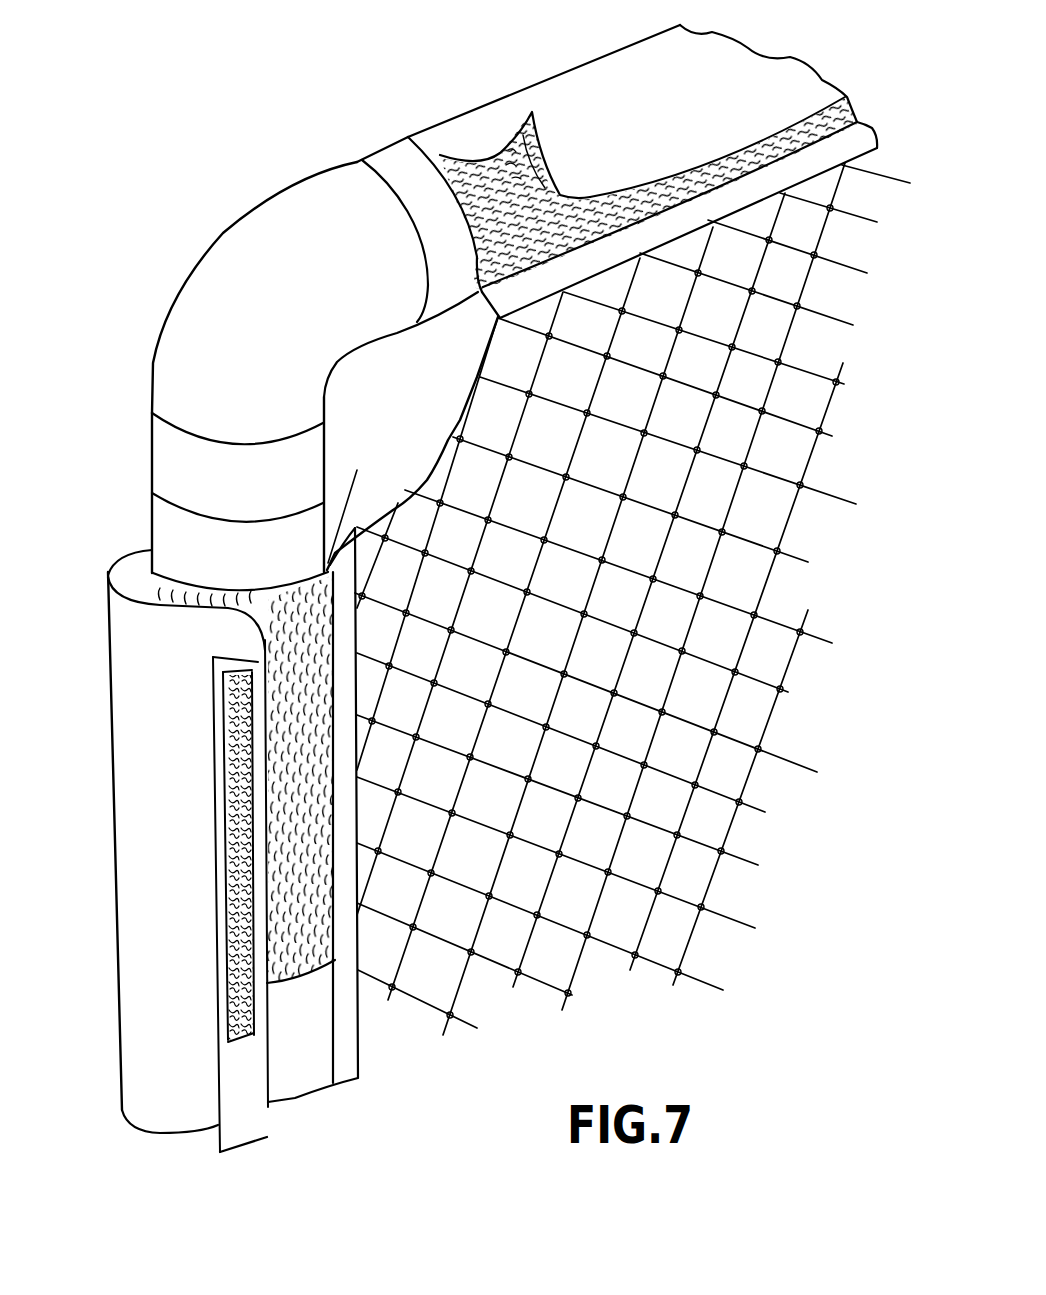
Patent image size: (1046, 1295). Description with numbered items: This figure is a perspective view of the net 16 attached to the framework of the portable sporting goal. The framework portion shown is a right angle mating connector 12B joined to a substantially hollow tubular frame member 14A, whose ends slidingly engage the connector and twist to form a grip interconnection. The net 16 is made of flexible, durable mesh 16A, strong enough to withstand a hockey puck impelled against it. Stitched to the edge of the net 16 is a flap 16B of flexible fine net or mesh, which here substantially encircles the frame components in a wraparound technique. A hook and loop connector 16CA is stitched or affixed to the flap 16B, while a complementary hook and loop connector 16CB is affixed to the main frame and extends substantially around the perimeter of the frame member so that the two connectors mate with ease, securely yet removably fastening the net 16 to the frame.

The right angle mating connector 12B is at (258, 217).
The tubular frame member 14A is at (158, 528).
The net 16 is at (490, 983).
The mesh 16A is at (608, 947).
The flap 16B is at (458, 127).
The hook and loop connector 16CA is at (532, 163).
The complementary hook and loop connector 16CB is at (490, 273).